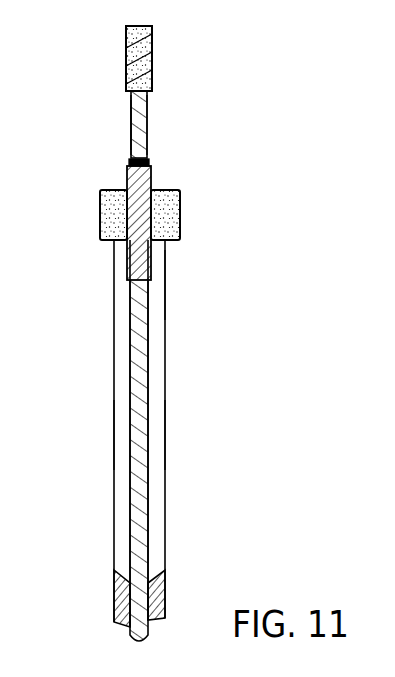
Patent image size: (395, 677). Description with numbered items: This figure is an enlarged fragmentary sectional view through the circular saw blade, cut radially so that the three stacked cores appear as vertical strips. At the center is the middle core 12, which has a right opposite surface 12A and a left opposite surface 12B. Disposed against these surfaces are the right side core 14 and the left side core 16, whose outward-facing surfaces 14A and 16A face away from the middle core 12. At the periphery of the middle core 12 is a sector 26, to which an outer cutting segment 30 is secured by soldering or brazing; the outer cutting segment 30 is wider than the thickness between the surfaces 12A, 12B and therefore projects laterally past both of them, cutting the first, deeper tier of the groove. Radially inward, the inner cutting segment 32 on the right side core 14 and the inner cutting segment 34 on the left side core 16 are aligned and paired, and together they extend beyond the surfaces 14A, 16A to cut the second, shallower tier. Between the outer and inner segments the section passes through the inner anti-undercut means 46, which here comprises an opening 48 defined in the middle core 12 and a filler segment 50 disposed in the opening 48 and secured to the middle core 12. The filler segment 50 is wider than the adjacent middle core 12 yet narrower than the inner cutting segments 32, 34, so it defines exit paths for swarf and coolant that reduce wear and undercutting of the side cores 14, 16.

The outer cutting segment 30 is at (126, 58).
The sector 26 is at (149, 108).
The right opposite surface of middle core 12A is at (150, 137).
The left opposite surface of middle core 12B is at (130, 138).
The opening 48 is at (129, 170).
The middle core 12 is at (153, 145).
The filler segment 50 is at (152, 258).
The inner cutting segment on left side core 34 is at (100, 206).
The inner cutting segment on right side core 32 is at (180, 208).
The inner anti-undercut means 46 is at (170, 286).
The outer opposite surface of left side core 16A is at (114, 395).
The left side core 16 is at (113, 435).
The outer opposite surface of right side core 14A is at (166, 393).
The right side core 14 is at (167, 432).